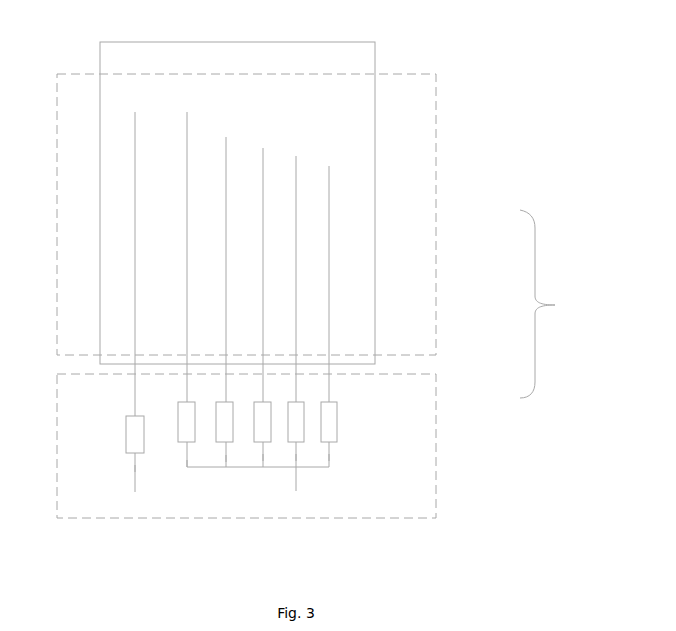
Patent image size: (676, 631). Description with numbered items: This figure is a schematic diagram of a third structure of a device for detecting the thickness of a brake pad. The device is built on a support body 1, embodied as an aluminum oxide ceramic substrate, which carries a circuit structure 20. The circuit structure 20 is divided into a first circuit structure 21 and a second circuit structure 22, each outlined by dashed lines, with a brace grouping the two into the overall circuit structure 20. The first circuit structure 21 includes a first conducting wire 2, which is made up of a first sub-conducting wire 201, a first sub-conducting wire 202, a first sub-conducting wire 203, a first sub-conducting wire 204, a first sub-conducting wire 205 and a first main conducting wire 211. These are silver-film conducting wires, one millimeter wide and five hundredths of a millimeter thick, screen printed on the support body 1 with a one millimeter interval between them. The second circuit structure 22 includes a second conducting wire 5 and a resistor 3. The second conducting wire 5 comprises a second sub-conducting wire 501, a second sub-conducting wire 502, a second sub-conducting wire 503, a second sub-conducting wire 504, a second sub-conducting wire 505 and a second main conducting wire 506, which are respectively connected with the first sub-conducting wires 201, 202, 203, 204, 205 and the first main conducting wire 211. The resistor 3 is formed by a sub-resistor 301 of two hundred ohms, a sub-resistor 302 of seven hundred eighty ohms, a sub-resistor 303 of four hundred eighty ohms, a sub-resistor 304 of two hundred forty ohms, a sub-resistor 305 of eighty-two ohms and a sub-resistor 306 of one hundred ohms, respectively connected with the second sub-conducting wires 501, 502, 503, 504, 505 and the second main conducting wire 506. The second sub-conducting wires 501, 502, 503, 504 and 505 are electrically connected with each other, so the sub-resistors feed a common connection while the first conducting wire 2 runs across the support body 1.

The support body 1 is at (375, 42).
The first conducting wire 2 is at (112, 185).
The resistor 3 is at (98, 433).
The second conducting wire 5 is at (98, 387).
The circuit structure 20 is at (550, 304).
The first circuit structure 21 is at (436, 214).
The second circuit structure 22 is at (436, 400).
The first sub-conducting wire 201 is at (187, 344).
The first sub-conducting wire 202 is at (226, 324).
The first sub-conducting wire 203 is at (263, 285).
The first sub-conducting wire 204 is at (296, 232).
The first sub-conducting wire 205 is at (329, 183).
The first main conducting wire 211 is at (135, 222).
The sub-resistor 301 is at (178, 440).
The sub-resistor 302 is at (213, 402).
The sub-resistor 303 is at (271, 428).
The sub-resistor 304 is at (304, 413).
The sub-resistor 305 is at (337, 403).
The sub-resistor 306 is at (127, 453).
The second sub-conducting wire 501 is at (187, 463).
The second sub-conducting wire 502 is at (225, 457).
The second sub-conducting wire 503 is at (262, 456).
The second sub-conducting wire 504 is at (296, 456).
The second sub-conducting wire 505 is at (329, 456).
The second main conducting wire 506 is at (135, 472).